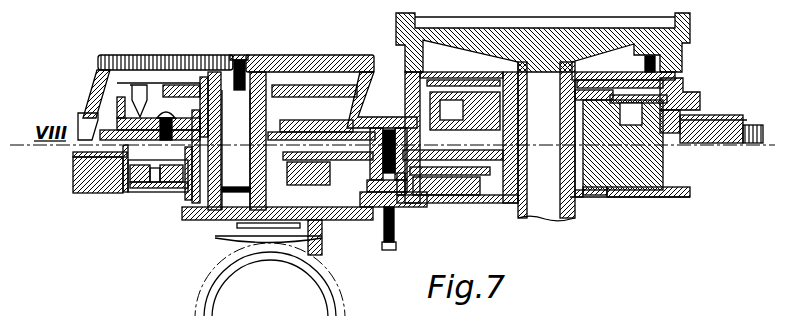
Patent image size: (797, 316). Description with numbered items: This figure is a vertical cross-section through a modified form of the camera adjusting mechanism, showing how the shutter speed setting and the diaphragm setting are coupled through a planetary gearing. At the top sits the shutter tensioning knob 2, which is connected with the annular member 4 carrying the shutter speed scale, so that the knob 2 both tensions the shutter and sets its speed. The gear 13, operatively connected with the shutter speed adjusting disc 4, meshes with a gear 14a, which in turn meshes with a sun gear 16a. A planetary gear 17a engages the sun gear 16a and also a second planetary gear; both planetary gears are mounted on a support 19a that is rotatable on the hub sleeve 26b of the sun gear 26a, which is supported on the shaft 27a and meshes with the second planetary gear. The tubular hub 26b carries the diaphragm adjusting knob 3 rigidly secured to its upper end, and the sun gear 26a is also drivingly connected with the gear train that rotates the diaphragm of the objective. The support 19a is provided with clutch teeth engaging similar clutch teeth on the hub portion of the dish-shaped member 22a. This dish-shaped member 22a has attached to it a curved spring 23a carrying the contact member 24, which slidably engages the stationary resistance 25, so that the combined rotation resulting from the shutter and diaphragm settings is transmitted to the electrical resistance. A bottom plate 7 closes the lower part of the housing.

The shutter tensioning knob 2 is at (670, 27).
The diaphragm adjusting knob 3 is at (343, 62).
The annular member 4 is at (700, 100).
The bottom plate 7 is at (670, 197).
The gear 13 is at (590, 160).
The gear 14a is at (468, 160).
The sun gear 16a is at (188, 152).
The planetary gear 17a is at (142, 187).
The support 19a is at (323, 180).
The dish-shaped member 22a is at (350, 96).
The curved spring 23a is at (140, 87).
The contact member 24 is at (137, 110).
The stationary resistance 25 is at (115, 128).
The sun gear 26a is at (182, 198).
The hub sleeve 26b is at (182, 212).
The shaft 27a is at (237, 178).